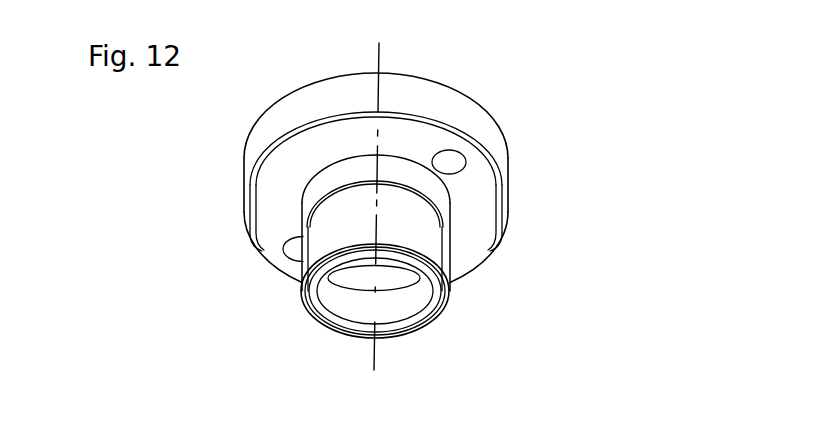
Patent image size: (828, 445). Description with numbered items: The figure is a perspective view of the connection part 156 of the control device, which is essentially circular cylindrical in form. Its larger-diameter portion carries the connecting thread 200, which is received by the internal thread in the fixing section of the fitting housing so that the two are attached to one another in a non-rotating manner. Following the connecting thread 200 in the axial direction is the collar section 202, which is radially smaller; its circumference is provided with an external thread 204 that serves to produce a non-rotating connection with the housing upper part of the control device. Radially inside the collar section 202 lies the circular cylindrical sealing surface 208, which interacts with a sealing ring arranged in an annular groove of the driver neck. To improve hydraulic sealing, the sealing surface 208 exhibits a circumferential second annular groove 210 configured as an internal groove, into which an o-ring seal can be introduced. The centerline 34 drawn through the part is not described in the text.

The connection part 156 is at (548, 151).
The connecting thread 200 is at (438, 105).
The collar section 202 is at (460, 250).
The external thread 204 is at (332, 230).
The sealing surface 208 is at (407, 300).
The second annular groove 210 is at (348, 290).
The longitudinal axis 34 is at (373, 357).